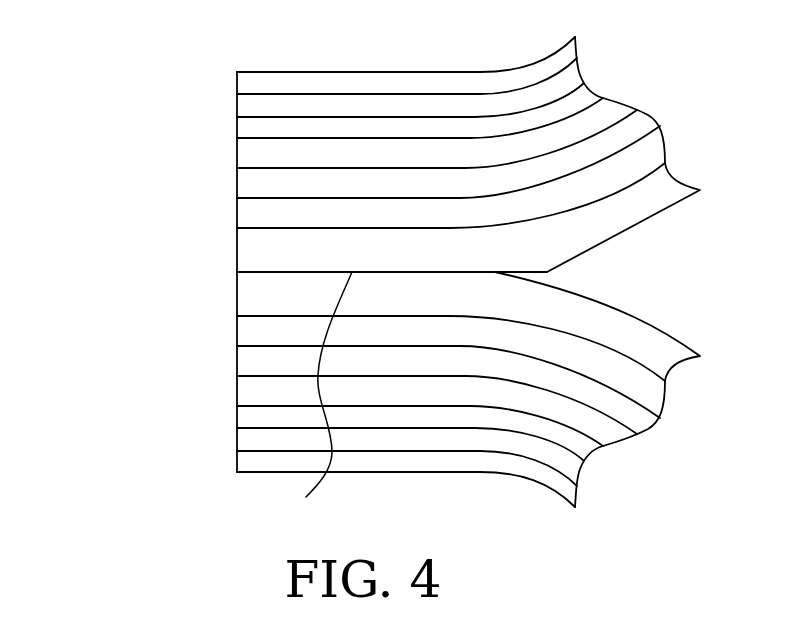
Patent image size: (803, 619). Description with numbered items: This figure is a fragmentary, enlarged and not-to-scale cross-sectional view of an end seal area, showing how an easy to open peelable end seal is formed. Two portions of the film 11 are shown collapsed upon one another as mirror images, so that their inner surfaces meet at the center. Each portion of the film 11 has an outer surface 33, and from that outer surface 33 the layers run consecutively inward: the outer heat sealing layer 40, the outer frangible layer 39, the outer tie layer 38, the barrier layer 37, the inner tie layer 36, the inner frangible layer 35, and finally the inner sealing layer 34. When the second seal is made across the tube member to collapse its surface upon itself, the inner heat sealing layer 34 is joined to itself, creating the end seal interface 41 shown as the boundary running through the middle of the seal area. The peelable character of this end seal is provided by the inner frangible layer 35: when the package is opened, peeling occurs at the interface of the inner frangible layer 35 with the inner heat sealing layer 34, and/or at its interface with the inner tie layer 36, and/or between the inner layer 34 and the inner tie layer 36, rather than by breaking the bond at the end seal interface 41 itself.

The film 11 is at (88, 65).
The outer surface 33 is at (373, 72).
The inner sealing layer 34 is at (268, 255).
The inner frangible layer 35 is at (268, 217).
The inner tie layer 36 is at (268, 187).
The barrier layer 37 is at (268, 157).
The outer tie layer 38 is at (268, 132).
The outer frangible layer 39 is at (268, 108).
The outer heat sealing layer 40 is at (268, 87).
The end seal interface 41 is at (314, 399).